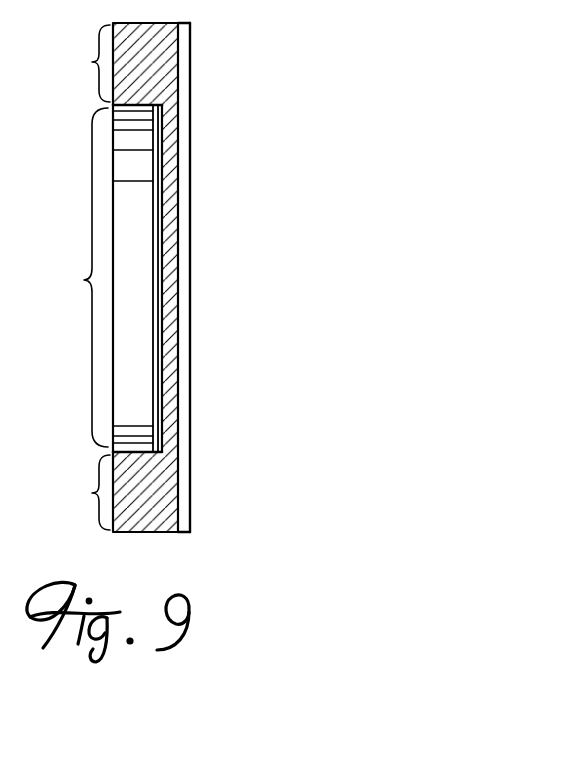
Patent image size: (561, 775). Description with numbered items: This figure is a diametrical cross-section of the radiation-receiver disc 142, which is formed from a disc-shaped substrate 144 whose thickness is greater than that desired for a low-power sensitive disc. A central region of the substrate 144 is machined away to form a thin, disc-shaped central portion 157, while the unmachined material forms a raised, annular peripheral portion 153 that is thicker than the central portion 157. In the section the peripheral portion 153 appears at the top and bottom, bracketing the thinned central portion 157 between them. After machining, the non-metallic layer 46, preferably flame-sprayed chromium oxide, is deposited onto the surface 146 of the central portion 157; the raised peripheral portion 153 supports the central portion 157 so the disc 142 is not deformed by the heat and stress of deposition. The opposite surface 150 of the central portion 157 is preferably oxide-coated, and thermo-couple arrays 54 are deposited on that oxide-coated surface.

The radiation-receiver disc 142 is at (230, 249).
The substrate 144 is at (193, 44).
The non-metallic layer 46 is at (185, 76).
The surface 146 is at (178, 360).
The opposite surface 150 is at (155, 357).
The thermo-couple arrays 54 is at (145, 269).
The central portion 157 is at (88, 199).
The raised annular peripheral portion 153 is at (90, 62).